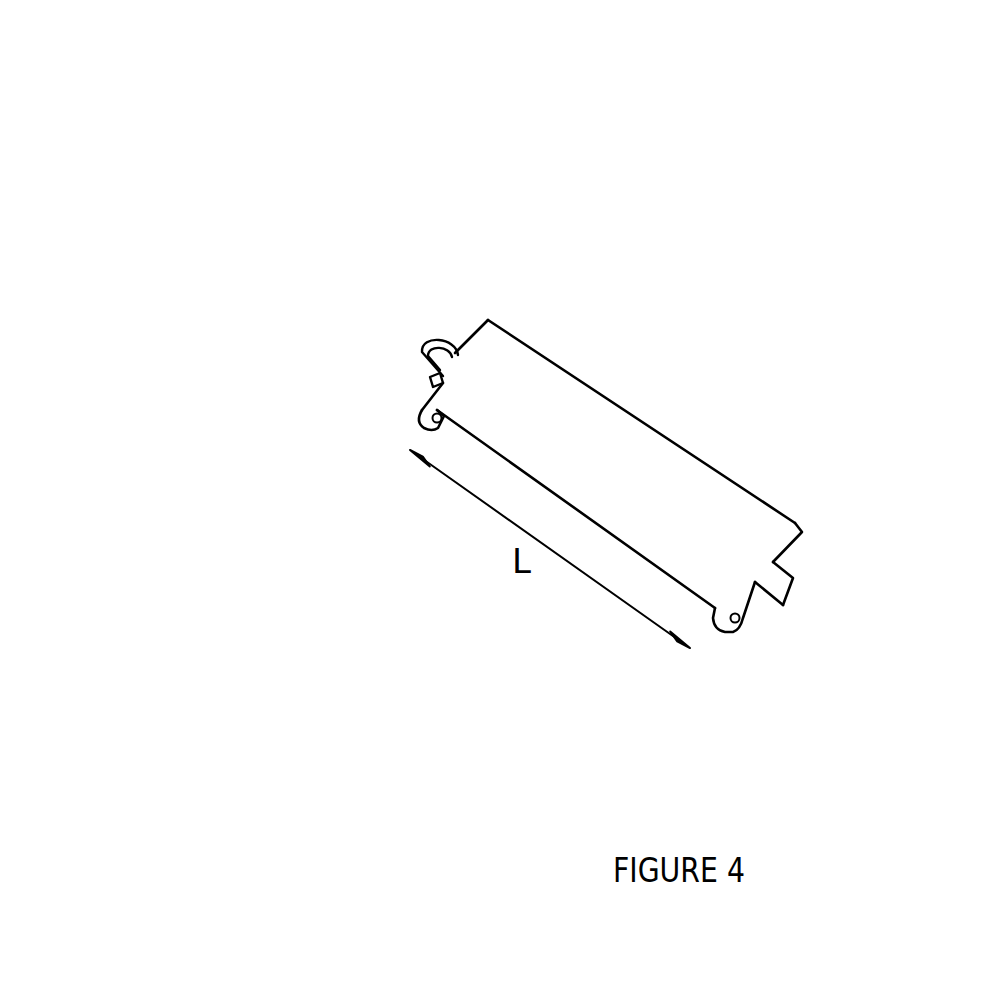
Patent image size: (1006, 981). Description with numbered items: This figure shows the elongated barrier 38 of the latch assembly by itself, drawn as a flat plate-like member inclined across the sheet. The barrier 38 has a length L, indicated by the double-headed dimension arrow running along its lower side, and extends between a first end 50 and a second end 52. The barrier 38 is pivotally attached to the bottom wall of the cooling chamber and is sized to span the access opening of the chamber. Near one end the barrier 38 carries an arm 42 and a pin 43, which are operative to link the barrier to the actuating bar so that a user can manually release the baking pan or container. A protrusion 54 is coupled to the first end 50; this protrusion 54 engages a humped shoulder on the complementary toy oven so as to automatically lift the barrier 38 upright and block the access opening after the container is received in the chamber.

The elongated barrier 38 is at (640, 445).
The arm 42 is at (445, 353).
The pin 43 is at (420, 355).
The first end 50 is at (760, 533).
The second end 52 is at (498, 343).
The protrusion 54 is at (785, 590).